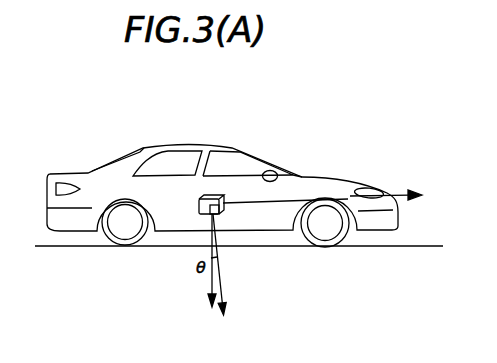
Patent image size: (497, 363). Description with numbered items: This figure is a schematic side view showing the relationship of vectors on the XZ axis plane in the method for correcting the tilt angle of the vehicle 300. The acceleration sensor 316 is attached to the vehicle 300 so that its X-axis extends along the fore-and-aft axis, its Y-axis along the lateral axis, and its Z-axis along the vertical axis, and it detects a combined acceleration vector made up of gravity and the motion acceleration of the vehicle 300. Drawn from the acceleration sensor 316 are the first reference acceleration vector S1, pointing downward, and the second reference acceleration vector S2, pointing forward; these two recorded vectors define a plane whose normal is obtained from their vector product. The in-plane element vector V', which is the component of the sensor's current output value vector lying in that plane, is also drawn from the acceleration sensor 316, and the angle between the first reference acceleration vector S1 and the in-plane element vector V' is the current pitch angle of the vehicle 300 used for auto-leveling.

The vehicle 300 is at (148, 146).
The acceleration sensor 316 is at (212, 196).
The in-plane element vector V is at (198, 307).
The first reference acceleration vector S1 is at (254, 307).
The second reference acceleration vector S2 is at (446, 188).